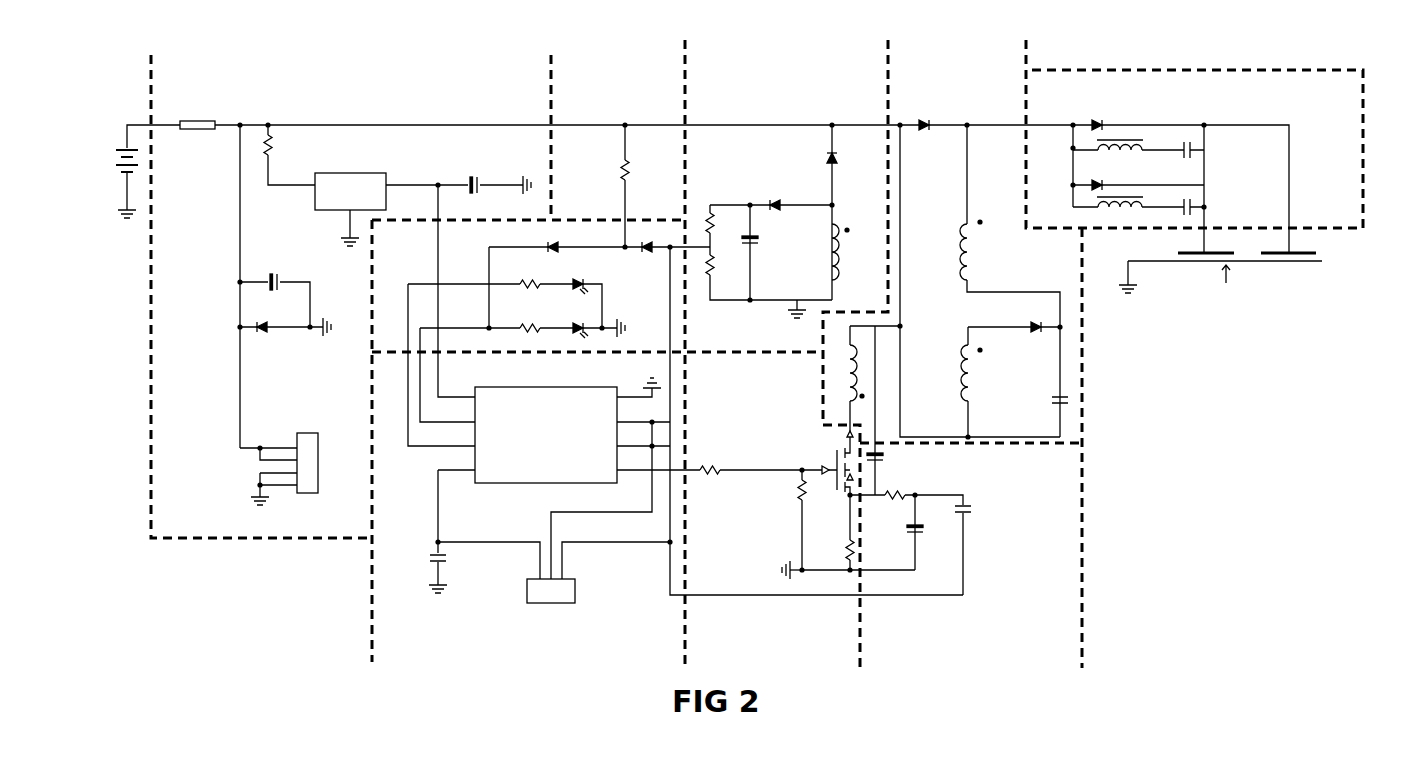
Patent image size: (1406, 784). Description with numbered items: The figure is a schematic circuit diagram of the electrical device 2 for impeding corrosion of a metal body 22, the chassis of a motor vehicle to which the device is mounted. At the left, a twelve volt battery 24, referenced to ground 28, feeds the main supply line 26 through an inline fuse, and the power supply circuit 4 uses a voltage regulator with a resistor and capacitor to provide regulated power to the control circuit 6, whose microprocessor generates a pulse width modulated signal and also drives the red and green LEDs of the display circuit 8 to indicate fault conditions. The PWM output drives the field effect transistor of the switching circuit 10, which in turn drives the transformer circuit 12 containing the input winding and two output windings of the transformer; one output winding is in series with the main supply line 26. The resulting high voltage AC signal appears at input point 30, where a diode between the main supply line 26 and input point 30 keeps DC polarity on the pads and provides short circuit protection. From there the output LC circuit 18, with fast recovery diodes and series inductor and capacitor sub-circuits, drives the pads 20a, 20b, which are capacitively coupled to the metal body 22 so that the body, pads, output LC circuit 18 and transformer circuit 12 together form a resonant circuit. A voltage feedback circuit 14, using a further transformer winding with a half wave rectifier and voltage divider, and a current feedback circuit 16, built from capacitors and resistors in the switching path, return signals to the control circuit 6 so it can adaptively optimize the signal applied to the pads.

The electrical device 2 is at (1044, 41).
The power supply circuit 4 is at (392, 89).
The control circuit 6 is at (413, 505).
The display circuit 8 is at (469, 271).
The switching circuit 10 is at (768, 411).
The transformer circuit 12 is at (1011, 191).
The voltage feedback circuit 14 is at (758, 103).
The current feedback circuit 16 is at (1031, 569).
The output LC circuit 18 is at (1313, 99).
The pad 20a is at (1172, 253).
The pad 20b is at (1326, 256).
The metal body 22 is at (1290, 262).
The battery 24 is at (119, 130).
The main supply line 26 is at (481, 125).
The ground 28 is at (125, 188).
The input point 30 is at (986, 125).